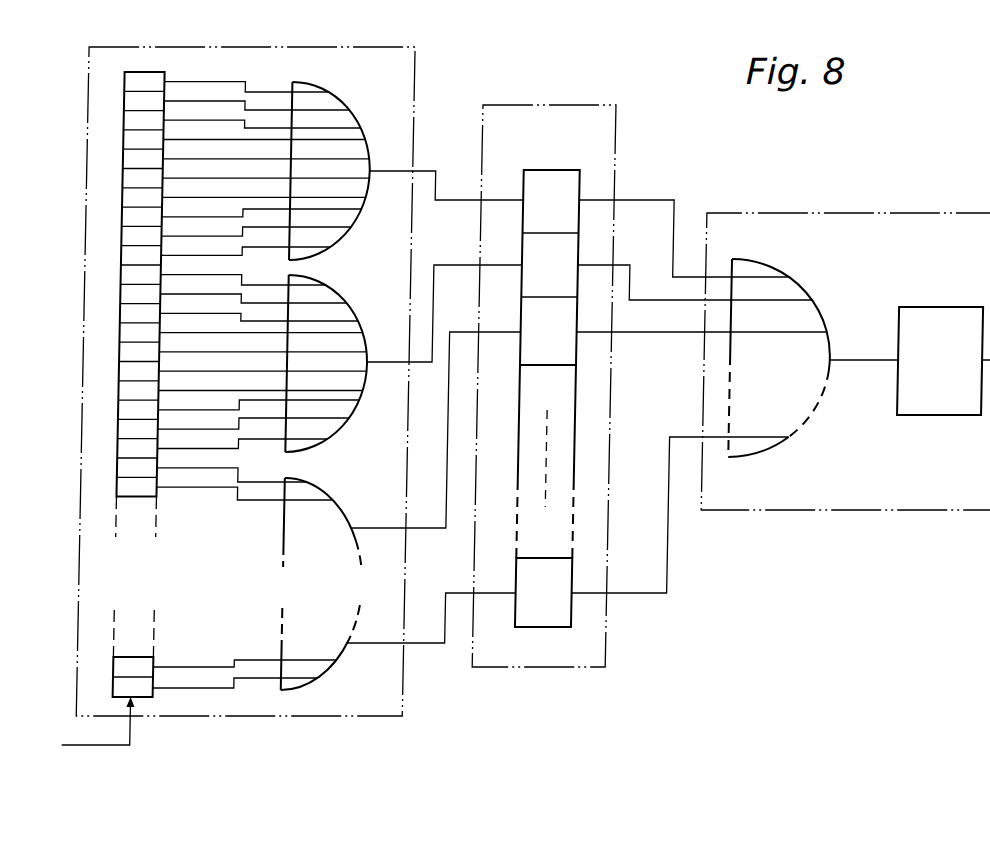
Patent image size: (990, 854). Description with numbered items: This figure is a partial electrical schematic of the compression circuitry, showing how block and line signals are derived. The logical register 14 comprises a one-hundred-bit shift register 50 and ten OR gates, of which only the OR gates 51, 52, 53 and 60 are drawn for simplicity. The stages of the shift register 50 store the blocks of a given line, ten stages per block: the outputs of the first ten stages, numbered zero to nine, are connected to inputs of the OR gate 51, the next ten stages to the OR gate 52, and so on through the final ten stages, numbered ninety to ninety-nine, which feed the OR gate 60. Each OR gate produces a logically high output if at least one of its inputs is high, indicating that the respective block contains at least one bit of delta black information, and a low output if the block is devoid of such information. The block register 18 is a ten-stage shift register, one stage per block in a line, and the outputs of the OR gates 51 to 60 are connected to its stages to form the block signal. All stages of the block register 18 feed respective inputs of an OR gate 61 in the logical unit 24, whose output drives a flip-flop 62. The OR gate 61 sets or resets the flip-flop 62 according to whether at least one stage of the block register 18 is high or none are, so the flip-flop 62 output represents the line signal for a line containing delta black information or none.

The logical register 14 is at (310, 47).
The shift register 50 is at (138, 72).
The OR gate 51 is at (357, 117).
The OR gate 52 is at (357, 309).
The OR gate 53 is at (340, 507).
The OR gate 60 is at (338, 665).
The block register 18 is at (563, 105).
The logical unit 24 is at (895, 213).
The OR gate 61 is at (808, 282).
The flip-flop 62 is at (946, 307).